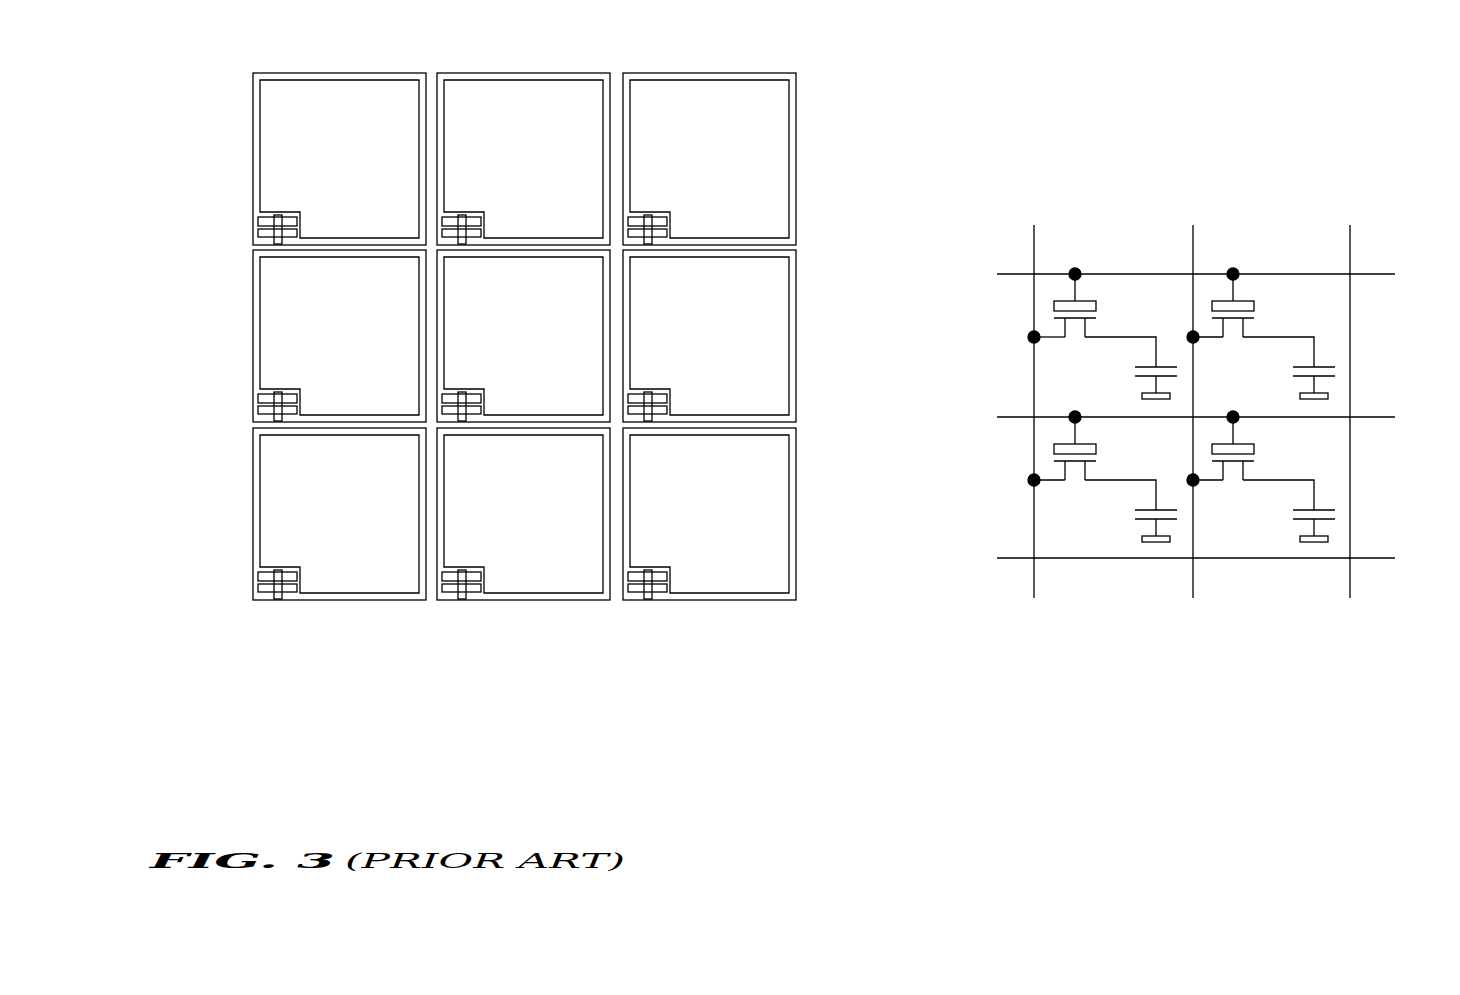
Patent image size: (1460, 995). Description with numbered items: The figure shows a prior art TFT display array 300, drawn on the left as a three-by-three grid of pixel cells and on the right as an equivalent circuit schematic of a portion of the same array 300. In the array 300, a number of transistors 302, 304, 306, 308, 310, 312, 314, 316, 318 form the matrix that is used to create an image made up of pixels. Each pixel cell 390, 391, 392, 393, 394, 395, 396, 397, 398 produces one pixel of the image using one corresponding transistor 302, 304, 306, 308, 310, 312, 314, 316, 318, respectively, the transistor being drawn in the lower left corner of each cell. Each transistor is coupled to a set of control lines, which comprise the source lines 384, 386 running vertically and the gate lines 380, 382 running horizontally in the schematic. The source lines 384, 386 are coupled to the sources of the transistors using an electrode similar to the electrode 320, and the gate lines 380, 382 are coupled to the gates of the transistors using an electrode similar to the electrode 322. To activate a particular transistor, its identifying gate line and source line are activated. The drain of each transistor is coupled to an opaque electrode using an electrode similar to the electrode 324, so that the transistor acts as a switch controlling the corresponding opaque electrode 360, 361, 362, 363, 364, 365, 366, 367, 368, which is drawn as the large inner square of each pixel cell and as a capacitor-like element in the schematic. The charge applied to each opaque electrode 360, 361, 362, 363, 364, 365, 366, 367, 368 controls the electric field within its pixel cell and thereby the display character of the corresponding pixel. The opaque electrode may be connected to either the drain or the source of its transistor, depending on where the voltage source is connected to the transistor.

The TFT display array 300 is at (840, 130).
The transistor 302 is at (276, 217).
The transistor 304 is at (462, 215).
The transistor 306 is at (648, 215).
The transistor 308 is at (276, 394).
The transistor 310 is at (462, 393).
The transistor 312 is at (648, 393).
The transistor 314 is at (276, 572).
The transistor 316 is at (462, 572).
The transistor 318 is at (648, 572).
The electrode 320 is at (262, 222).
The electrode 322 is at (258, 241).
The electrode 324 is at (298, 226).
The opaque electrode 360 is at (406, 122).
The opaque electrode 361 is at (593, 122).
The opaque electrode 362 is at (778, 122).
The opaque electrode 363 is at (406, 301).
The opaque electrode 364 is at (593, 301).
The opaque electrode 365 is at (778, 301).
The opaque electrode 366 is at (406, 477).
The opaque electrode 367 is at (593, 477).
The opaque electrode 368 is at (778, 477).
The gate line 380 is at (1378, 274).
The gate line 382 is at (1378, 417).
The source line 384 is at (1032, 580).
The source line 386 is at (1190, 580).
The pixel cell 390 is at (310, 73).
The pixel cell 391 is at (497, 73).
The pixel cell 392 is at (682, 73).
The pixel cell 393 is at (252, 333).
The pixel cell 394 is at (606, 345).
The pixel cell 395 is at (797, 322).
The pixel cell 396 is at (252, 548).
The pixel cell 397 is at (553, 600).
The pixel cell 398 is at (737, 600).